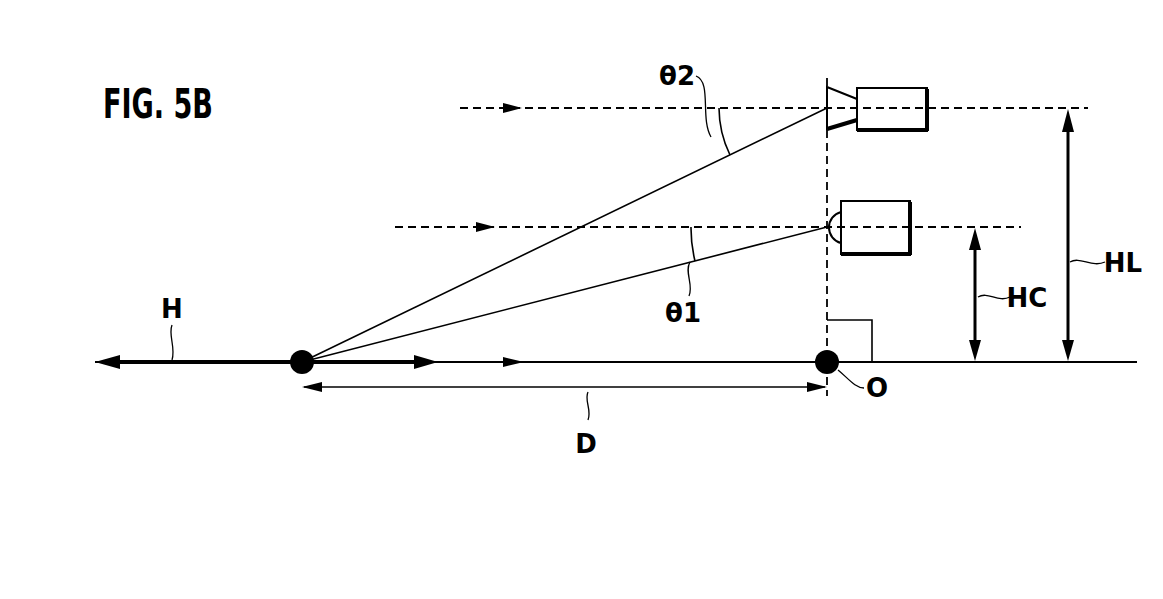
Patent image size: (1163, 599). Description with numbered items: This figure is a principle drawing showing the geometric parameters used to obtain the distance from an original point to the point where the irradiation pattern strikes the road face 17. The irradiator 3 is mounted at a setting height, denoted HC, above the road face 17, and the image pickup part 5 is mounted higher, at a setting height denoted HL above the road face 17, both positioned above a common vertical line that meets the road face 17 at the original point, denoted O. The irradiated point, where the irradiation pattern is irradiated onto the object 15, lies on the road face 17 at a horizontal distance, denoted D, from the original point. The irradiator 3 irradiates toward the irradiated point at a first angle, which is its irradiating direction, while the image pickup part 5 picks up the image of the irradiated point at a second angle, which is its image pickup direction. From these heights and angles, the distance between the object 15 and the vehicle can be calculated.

The irradiator 3 is at (888, 201).
The image pickup part 5 is at (888, 88).
The object 15 is at (298, 373).
The road face 17 is at (946, 365).